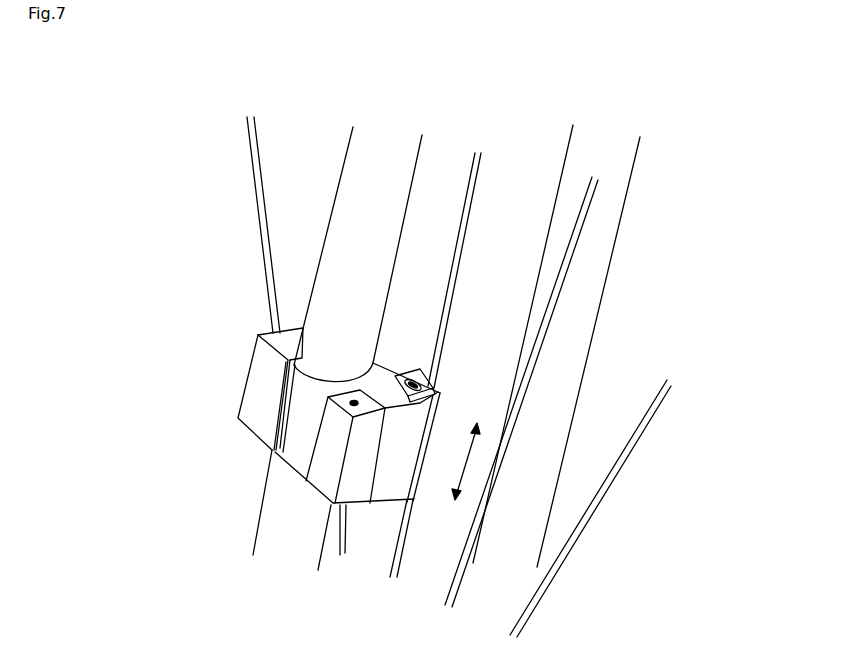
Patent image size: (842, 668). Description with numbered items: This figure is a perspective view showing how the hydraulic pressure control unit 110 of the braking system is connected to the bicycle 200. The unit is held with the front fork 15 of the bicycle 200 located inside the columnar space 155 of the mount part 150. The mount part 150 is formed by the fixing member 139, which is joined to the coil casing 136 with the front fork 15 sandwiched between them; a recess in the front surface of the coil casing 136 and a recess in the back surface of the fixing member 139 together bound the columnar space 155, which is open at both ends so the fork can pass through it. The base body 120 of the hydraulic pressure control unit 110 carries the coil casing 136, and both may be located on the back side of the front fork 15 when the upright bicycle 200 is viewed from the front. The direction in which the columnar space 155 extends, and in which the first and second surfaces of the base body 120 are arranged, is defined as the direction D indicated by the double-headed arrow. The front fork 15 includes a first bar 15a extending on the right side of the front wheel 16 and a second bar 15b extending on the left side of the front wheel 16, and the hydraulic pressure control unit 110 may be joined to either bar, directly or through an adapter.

The front fork 15 is at (386, 110).
The first bar 15a is at (362, 178).
The second bar 15b is at (578, 168).
The front wheel 16 is at (552, 319).
The hydraulic pressure control unit 110 is at (214, 332).
The base body 120 is at (325, 475).
The coil casing 136 is at (392, 478).
The fixing member 139 is at (255, 402).
The mount part 150 is at (262, 456).
The columnar space 155 is at (300, 358).
The bicycle 200 is at (753, 77).